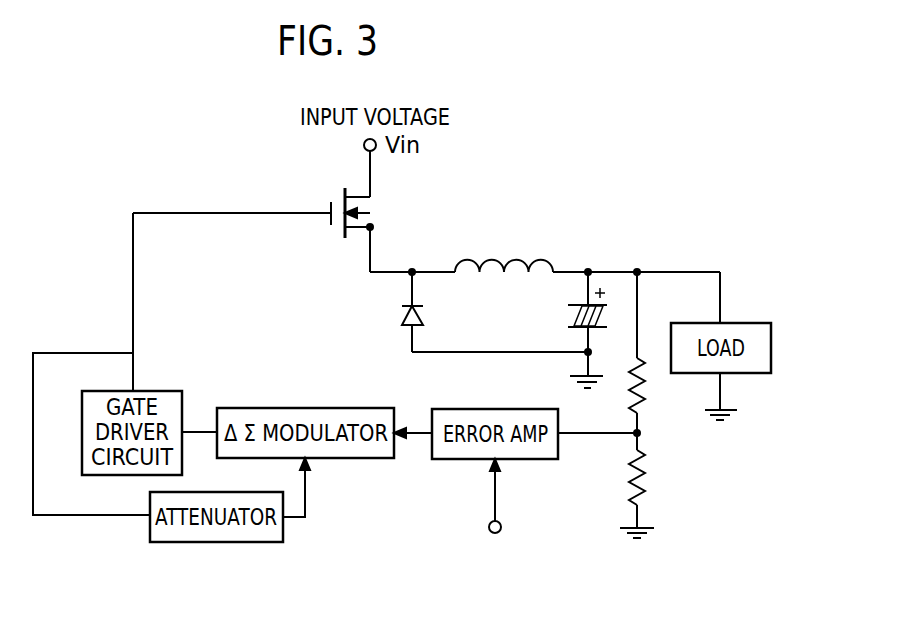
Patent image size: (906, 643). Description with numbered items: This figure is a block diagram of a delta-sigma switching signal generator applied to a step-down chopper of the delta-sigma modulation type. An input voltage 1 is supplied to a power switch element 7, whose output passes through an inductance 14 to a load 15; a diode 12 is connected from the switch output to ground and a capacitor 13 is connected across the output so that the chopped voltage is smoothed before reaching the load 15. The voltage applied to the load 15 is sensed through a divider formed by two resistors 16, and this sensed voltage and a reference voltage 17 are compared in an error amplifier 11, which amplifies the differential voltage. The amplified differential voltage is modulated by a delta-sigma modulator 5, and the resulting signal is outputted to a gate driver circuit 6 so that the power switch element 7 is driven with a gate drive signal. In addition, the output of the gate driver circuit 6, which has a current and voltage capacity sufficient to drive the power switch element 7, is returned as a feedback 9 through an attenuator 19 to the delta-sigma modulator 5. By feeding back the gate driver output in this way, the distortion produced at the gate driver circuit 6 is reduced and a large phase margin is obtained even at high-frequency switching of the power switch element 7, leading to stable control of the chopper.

The input signal 1 is at (359, 164).
The power switch element 7 is at (326, 227).
The inductance 14 is at (477, 256).
The diode 12 is at (399, 318).
The capacitor 13 is at (563, 315).
The load 15 is at (752, 318).
The resistor 16 is at (643, 396).
The gate driver circuit 6 is at (172, 389).
The delta-sigma modulator 5 is at (352, 406).
The error amplifier 11 is at (508, 394).
The feedback 9 is at (84, 449).
The attenuator 19 is at (237, 544).
The reference voltage 17 is at (495, 534).